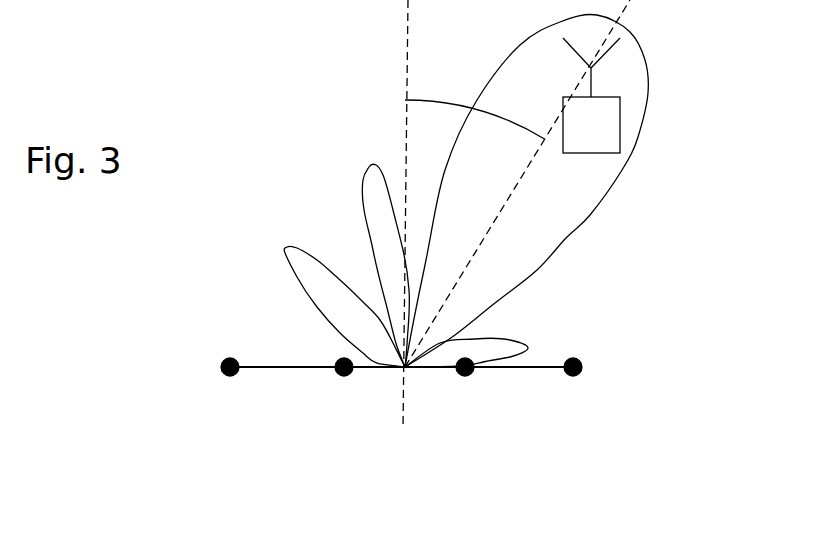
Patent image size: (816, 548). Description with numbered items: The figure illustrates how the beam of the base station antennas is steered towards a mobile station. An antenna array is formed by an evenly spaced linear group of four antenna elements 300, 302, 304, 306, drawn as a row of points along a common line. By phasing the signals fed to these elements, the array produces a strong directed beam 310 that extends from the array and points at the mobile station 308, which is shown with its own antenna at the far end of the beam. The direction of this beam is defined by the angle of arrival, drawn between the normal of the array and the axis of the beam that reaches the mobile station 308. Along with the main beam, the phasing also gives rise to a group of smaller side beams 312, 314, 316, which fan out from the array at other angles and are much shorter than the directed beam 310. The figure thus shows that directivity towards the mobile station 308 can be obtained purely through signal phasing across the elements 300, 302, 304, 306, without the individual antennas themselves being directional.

The antenna element 300 is at (229, 376).
The antenna element 302 is at (343, 376).
The antenna element 304 is at (467, 376).
The antenna element 306 is at (575, 376).
The mobile station 308 is at (620, 137).
The directed beam 310 is at (617, 183).
The side beam 312 is at (285, 253).
The side beam 314 is at (365, 182).
The side beam 316 is at (528, 345).